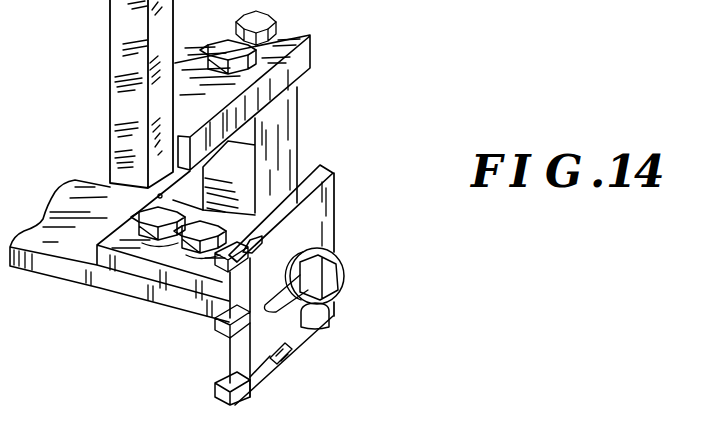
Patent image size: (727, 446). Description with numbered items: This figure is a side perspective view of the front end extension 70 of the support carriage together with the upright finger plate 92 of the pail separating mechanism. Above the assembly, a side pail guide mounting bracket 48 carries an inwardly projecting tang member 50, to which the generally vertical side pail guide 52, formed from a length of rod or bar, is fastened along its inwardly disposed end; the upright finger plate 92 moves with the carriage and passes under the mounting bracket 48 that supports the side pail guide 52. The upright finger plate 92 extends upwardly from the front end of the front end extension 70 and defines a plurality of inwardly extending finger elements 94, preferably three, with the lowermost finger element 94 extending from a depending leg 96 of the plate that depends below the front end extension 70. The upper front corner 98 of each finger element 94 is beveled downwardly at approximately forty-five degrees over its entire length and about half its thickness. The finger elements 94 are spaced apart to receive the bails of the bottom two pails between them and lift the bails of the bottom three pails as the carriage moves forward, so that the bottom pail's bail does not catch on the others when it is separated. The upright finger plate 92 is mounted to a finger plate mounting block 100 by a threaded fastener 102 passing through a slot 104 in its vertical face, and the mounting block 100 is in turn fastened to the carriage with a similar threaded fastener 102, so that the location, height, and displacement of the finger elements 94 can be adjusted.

The side pail guide 52 is at (122, 23).
The tang member 50 is at (304, 60).
The side pail guide mounting bracket 48 is at (285, 137).
The finger plate mounting block 100 is at (187, 292).
The threaded fastener 102 is at (193, 251).
The upright finger plate 92 is at (327, 213).
The upper front corner 98 is at (260, 244).
The finger element 94 is at (243, 266).
The front end extension 70 is at (312, 328).
The slot 104 is at (288, 352).
The depending leg 96 is at (262, 373).